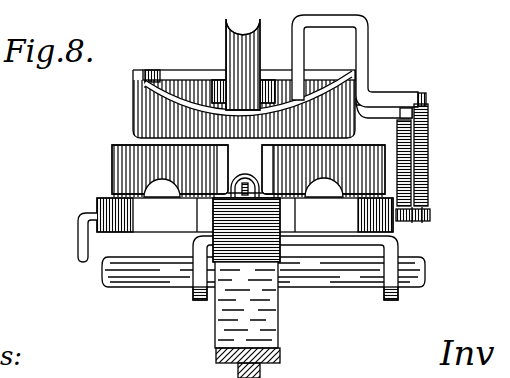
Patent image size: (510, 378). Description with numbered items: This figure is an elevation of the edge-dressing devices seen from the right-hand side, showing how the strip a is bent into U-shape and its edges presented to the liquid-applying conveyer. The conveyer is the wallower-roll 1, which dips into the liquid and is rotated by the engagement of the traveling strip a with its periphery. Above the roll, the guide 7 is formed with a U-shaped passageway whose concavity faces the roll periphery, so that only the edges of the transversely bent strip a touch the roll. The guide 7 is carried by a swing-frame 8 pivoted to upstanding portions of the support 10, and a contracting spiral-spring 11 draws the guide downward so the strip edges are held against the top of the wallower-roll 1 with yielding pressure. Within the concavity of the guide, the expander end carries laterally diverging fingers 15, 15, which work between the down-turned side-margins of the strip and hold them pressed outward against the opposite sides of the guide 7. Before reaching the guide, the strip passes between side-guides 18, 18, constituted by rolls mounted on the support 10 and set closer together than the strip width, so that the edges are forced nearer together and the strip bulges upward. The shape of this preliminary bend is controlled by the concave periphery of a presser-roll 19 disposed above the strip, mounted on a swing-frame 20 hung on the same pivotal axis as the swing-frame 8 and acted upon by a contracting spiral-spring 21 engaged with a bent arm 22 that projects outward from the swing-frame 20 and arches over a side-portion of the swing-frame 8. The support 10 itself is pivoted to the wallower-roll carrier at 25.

The wallower-roll 1 is at (222, 316).
The guide 7 is at (248, 170).
The swing-frame 8 is at (133, 112).
The support 10 is at (97, 200).
The contracting spiral-spring 11 is at (424, 146).
The laterally diverging fingers 15 is at (237, 211).
The side-guides 18 is at (112, 150).
The presser-roll 19 is at (226, 40).
The swing-frame 20 is at (265, 80).
The contracting spiral-spring 21 is at (410, 124).
The bent arm 22 is at (363, 34).
The pivot 25 is at (329, 283).
The strip a is at (239, 169).